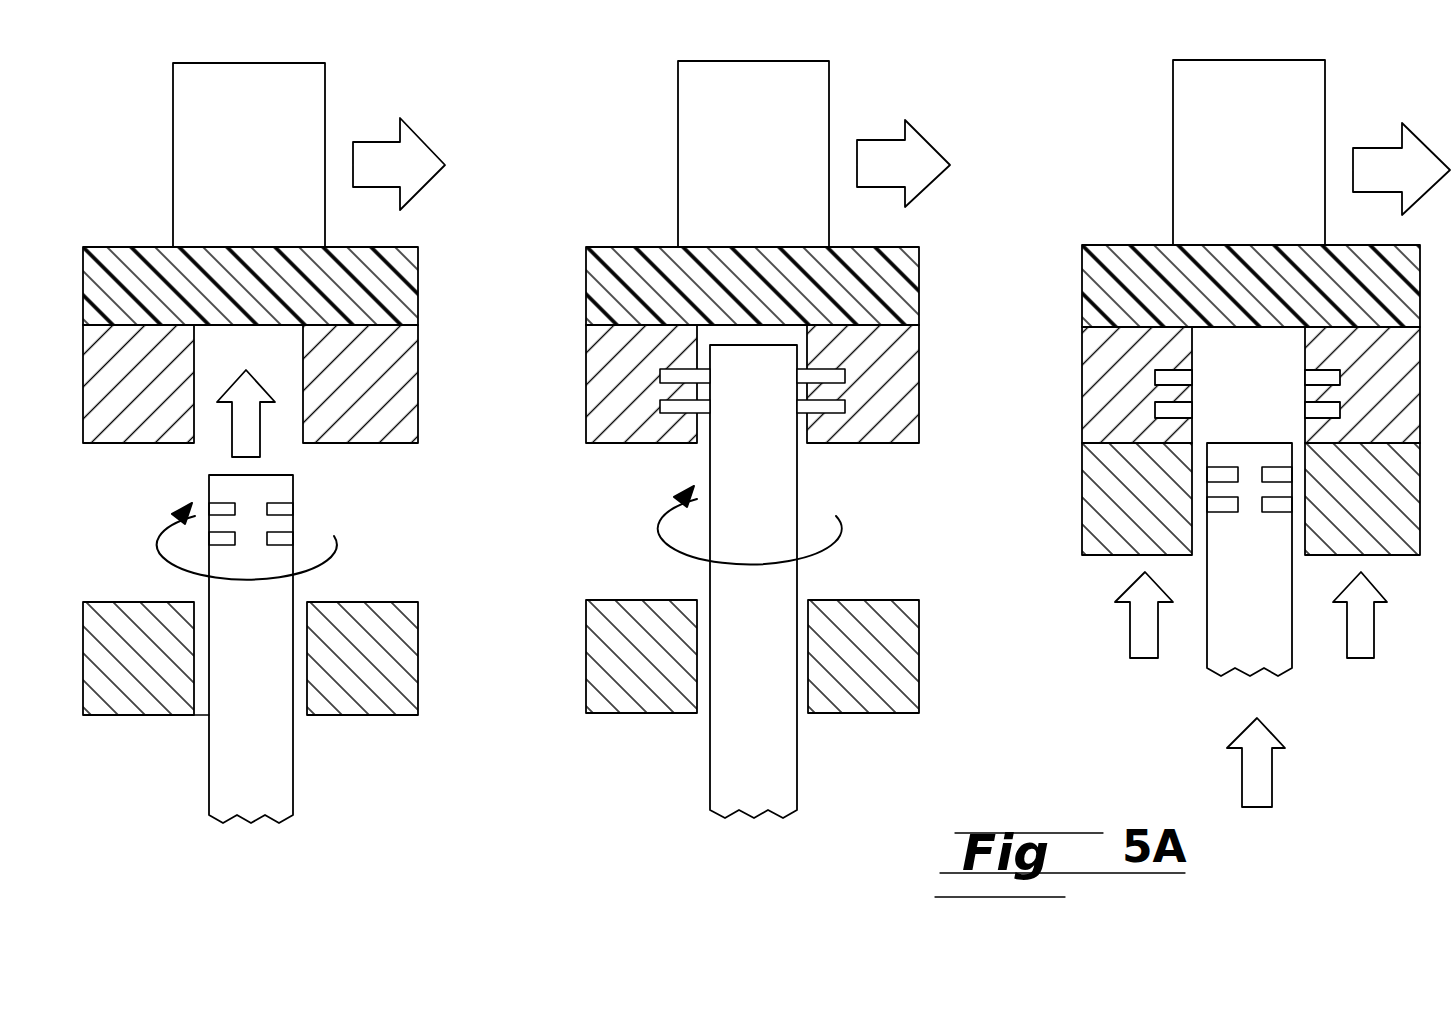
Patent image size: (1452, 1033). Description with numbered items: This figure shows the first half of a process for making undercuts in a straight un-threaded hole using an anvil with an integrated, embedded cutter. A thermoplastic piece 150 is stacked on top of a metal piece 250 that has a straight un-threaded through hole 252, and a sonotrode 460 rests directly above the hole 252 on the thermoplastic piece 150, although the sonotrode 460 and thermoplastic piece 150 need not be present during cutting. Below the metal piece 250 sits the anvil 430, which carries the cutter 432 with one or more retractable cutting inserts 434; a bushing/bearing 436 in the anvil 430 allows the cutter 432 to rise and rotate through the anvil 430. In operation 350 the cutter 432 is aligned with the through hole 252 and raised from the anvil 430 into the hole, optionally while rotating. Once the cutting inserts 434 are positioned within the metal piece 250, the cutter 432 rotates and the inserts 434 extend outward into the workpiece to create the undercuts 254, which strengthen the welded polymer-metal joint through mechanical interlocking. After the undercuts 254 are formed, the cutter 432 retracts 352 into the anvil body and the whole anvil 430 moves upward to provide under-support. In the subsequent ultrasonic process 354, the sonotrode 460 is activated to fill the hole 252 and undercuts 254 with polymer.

The thermoplastic piece 150 is at (410, 280).
The metal piece 250 is at (413, 370).
The straight un-threaded through hole 252 is at (280, 388).
The undercuts 254 is at (1153, 386).
The operation 350 is at (413, 182).
The retraction 352 is at (880, 148).
The ultrasonic process 354 is at (1366, 155).
The anvil 430 is at (385, 712).
The cutter 432 is at (288, 792).
The retractable cutting inserts 434 is at (297, 503).
The bushing/bearing 436 is at (198, 715).
The sonotrode 460 is at (187, 162).